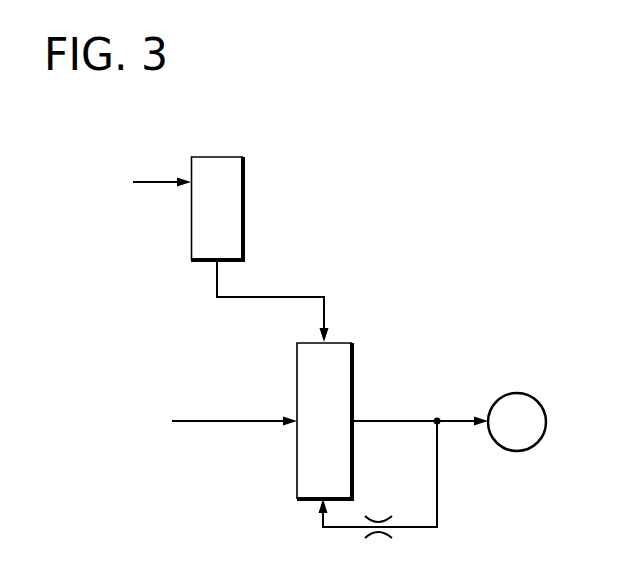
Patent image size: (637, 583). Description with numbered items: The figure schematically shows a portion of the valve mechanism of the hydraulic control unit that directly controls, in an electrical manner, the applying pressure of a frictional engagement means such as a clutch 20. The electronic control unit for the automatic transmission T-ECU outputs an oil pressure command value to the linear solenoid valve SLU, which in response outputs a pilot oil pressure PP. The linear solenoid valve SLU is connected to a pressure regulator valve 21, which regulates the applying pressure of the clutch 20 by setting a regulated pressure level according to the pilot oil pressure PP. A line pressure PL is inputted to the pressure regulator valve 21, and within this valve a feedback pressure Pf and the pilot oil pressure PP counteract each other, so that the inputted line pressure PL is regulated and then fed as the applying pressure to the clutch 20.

The clutch 20 is at (512, 393).
The pressure regulator valve 21 is at (343, 367).
The linear solenoid valve SLU is at (245, 178).
The electronic control unit for the automatic transmission T-ECU is at (116, 182).
The pilot oil pressure PP is at (273, 300).
The line pressure PL is at (234, 407).
The feedback pressure Pf is at (378, 495).